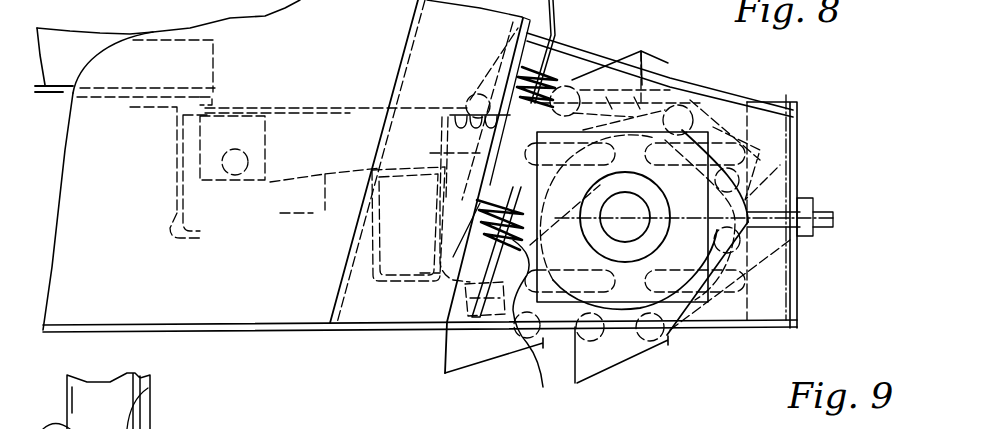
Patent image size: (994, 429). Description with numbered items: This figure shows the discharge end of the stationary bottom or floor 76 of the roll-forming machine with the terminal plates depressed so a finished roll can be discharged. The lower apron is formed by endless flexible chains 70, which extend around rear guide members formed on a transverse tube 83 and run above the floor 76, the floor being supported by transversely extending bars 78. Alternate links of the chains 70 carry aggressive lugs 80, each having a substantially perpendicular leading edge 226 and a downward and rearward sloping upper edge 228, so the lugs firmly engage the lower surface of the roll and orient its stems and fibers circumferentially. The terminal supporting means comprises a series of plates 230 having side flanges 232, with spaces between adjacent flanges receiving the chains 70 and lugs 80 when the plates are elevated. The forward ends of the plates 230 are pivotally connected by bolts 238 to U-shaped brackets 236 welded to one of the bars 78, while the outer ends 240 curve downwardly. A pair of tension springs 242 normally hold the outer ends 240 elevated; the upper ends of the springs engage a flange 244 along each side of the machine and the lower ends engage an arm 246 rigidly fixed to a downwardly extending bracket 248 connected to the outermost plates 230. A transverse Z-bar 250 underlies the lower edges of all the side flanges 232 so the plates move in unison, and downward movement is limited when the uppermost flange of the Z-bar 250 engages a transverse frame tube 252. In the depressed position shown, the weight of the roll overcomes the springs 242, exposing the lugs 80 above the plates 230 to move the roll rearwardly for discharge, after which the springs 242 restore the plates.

The endless flexible chains 70 is at (727, 84).
The bottom or floor 76 is at (58, 93).
The transversely extending bars 78 is at (170, 205).
The lugs 80 is at (641, 51).
The transverse tube 83 is at (800, 241).
The leading edge 226 is at (670, 74).
The upper edge 228 is at (575, 75).
The plates 230 is at (359, 108).
The side flanges 232 is at (325, 210).
The U-shaped brackets 236 is at (180, 160).
The bolts 238 is at (234, 176).
The outer ends of plates 240 is at (798, 121).
The tension springs 242 is at (543, 360).
The flange 244 is at (156, 388).
The arm 246 is at (458, 265).
The downwardly extending bracket 248 is at (512, 44).
The Z-bar 250 is at (456, 86).
The frame tube 252 is at (412, 290).